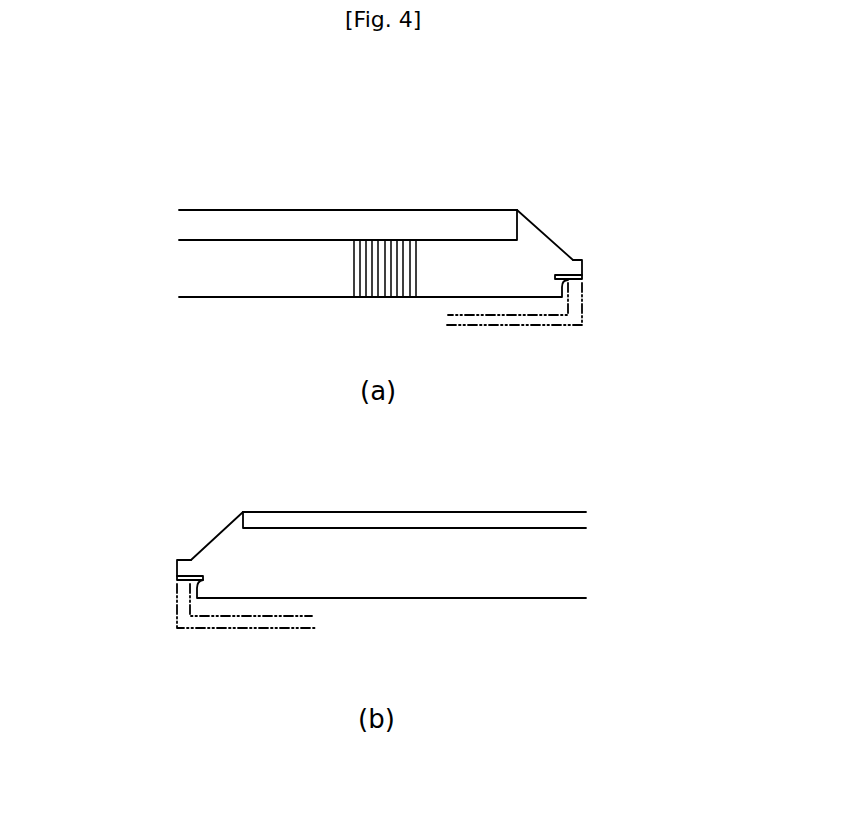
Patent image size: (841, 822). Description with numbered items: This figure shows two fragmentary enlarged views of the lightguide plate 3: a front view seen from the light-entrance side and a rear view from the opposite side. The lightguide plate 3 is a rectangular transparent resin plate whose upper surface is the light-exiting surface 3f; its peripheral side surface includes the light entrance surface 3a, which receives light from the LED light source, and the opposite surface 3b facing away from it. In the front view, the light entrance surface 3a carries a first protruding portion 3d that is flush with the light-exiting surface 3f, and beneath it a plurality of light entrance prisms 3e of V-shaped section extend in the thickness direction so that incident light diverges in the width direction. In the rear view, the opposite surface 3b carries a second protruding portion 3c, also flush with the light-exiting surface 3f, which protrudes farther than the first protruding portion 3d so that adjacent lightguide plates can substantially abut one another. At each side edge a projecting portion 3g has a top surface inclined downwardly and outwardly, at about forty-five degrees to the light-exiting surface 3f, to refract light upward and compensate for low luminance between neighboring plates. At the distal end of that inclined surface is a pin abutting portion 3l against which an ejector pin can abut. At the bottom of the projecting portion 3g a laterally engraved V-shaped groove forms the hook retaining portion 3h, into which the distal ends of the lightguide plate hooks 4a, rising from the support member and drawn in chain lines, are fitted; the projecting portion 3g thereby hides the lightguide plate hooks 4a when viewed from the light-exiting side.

The lightguide plate 3 is at (391, 187).
The light entrance surface 3a is at (270, 267).
The opposite surface 3b is at (460, 573).
The second protruding portion 3c is at (470, 520).
The first protruding portion 3d is at (288, 227).
The light entrance prisms 3e is at (383, 273).
The light-exiting surface 3f is at (216, 210).
The projecting portion 3g is at (555, 244).
The hook retaining portion 3h is at (582, 277).
The pin abutting portion 3l is at (580, 261).
The lightguide plate hooks 4a is at (582, 297).